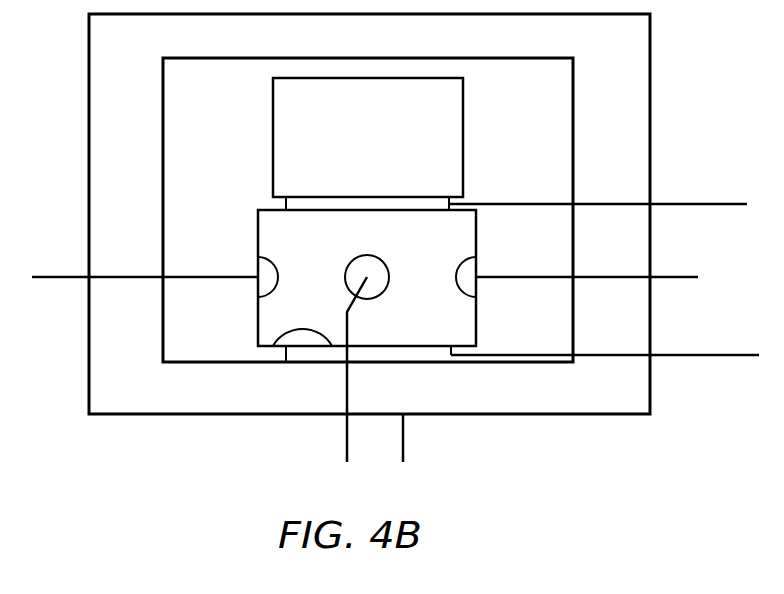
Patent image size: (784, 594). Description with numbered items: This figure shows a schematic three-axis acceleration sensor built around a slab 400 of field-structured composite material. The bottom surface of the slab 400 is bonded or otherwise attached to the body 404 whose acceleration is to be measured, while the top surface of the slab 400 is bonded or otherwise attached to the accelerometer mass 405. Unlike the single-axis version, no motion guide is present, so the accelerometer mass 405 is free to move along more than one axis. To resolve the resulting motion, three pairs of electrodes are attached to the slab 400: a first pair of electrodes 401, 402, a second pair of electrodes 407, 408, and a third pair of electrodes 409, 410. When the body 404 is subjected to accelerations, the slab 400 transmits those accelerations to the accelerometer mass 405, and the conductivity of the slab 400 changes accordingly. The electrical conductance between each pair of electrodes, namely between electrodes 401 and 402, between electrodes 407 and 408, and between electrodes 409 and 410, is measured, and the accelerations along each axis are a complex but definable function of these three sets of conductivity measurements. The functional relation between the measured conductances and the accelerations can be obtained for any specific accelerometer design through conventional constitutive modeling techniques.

The slab 400 is at (387, 242).
The electrode 401 is at (260, 268).
The electrode 402 is at (470, 270).
The body 404 is at (190, 400).
The accelerometer mass 405 is at (387, 139).
The electrode 407 is at (373, 273).
The electrode 408 is at (403, 433).
The electrode 409 is at (415, 205).
The electrode 410 is at (275, 345).